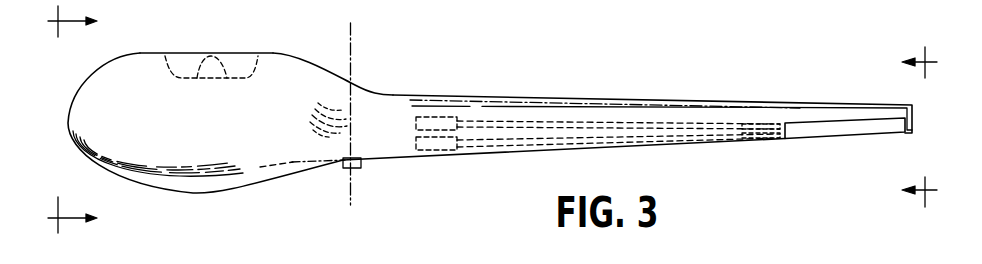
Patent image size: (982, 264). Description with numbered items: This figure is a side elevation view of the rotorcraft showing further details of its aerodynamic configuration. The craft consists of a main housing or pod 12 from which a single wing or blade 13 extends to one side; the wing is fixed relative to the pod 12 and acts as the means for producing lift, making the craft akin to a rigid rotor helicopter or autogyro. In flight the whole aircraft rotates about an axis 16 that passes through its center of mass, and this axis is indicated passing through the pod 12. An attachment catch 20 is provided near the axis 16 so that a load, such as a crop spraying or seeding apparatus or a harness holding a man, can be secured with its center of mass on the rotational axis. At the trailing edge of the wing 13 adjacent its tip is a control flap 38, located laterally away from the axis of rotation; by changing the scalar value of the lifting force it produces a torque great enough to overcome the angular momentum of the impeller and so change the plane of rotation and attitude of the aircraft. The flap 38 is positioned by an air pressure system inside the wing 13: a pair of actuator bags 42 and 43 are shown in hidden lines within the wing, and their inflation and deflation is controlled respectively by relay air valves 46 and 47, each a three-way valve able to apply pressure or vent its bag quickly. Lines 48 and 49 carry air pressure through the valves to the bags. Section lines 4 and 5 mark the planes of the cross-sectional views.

The section line 4- 4 is at (908, 127).
The section line 5- 5 is at (81, 119).
The main housing or pod 12 is at (258, 176).
The wing or blade 13 is at (656, 110).
The axis of rotation 16 is at (352, 42).
The attachment catch 20 is at (360, 168).
The control flap 38 is at (807, 133).
The actuator bag 42 is at (752, 124).
The actuator bag 43 is at (747, 138).
The relay air valve 46 is at (438, 116).
The relay air valve 47 is at (438, 151).
The line 48 is at (583, 120).
The line 49 is at (586, 145).